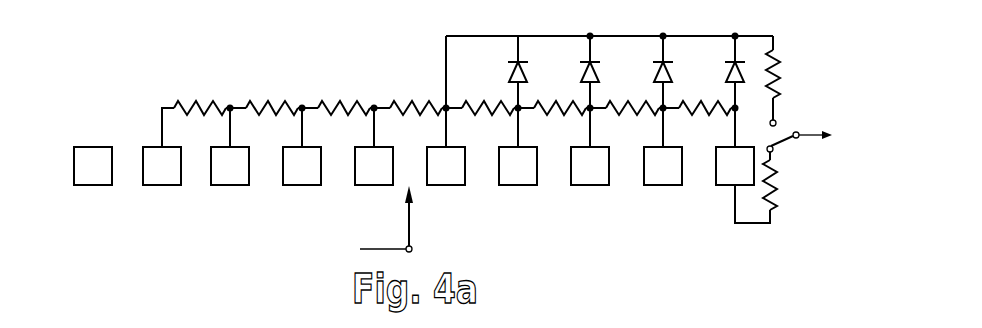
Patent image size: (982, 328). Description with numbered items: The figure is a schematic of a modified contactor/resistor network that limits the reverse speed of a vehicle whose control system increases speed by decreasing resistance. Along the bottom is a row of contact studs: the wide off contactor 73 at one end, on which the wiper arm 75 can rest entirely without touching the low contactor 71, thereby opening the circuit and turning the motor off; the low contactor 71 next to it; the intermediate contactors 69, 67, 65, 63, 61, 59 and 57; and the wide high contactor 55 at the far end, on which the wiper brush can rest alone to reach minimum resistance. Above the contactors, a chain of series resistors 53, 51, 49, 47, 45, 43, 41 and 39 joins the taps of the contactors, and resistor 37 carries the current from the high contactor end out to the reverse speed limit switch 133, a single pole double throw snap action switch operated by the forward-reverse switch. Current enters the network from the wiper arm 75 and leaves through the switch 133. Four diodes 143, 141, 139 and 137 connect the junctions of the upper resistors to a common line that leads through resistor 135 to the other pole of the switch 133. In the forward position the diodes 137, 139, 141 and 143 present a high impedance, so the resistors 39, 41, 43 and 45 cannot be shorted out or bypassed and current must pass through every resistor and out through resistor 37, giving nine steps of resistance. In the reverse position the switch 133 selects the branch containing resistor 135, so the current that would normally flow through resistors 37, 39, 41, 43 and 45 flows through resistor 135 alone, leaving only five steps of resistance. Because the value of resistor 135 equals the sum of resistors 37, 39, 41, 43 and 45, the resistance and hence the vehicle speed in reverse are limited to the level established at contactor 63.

The resistor 37 is at (775, 192).
The resistor 39 is at (697, 113).
The resistor 41 is at (625, 113).
The resistor 43 is at (553, 113).
The resistor 45 is at (481, 113).
The resistor 47 is at (409, 113).
The resistor 49 is at (338, 113).
The resistor 51 is at (266, 113).
The resistor 53 is at (193, 113).
The high contactor 55 is at (725, 178).
The intermediate contactor 57 is at (653, 178).
The intermediate contactor 59 is at (580, 178).
The intermediate contactor 61 is at (508, 178).
The intermediate contactor 63 is at (436, 178).
The intermediate contactor 65 is at (364, 178).
The intermediate contactor 67 is at (292, 178).
The intermediate contactor 69 is at (220, 178).
The low contactor 71 is at (152, 178).
The off contactor 73 is at (83, 178).
The wiper arm 75 is at (409, 219).
The reverse speed limit switch 133 is at (783, 141).
The resistor 135 is at (777, 78).
The diode 137 is at (730, 74).
The diode 139 is at (658, 74).
The diode 141 is at (585, 74).
The diode 143 is at (513, 74).